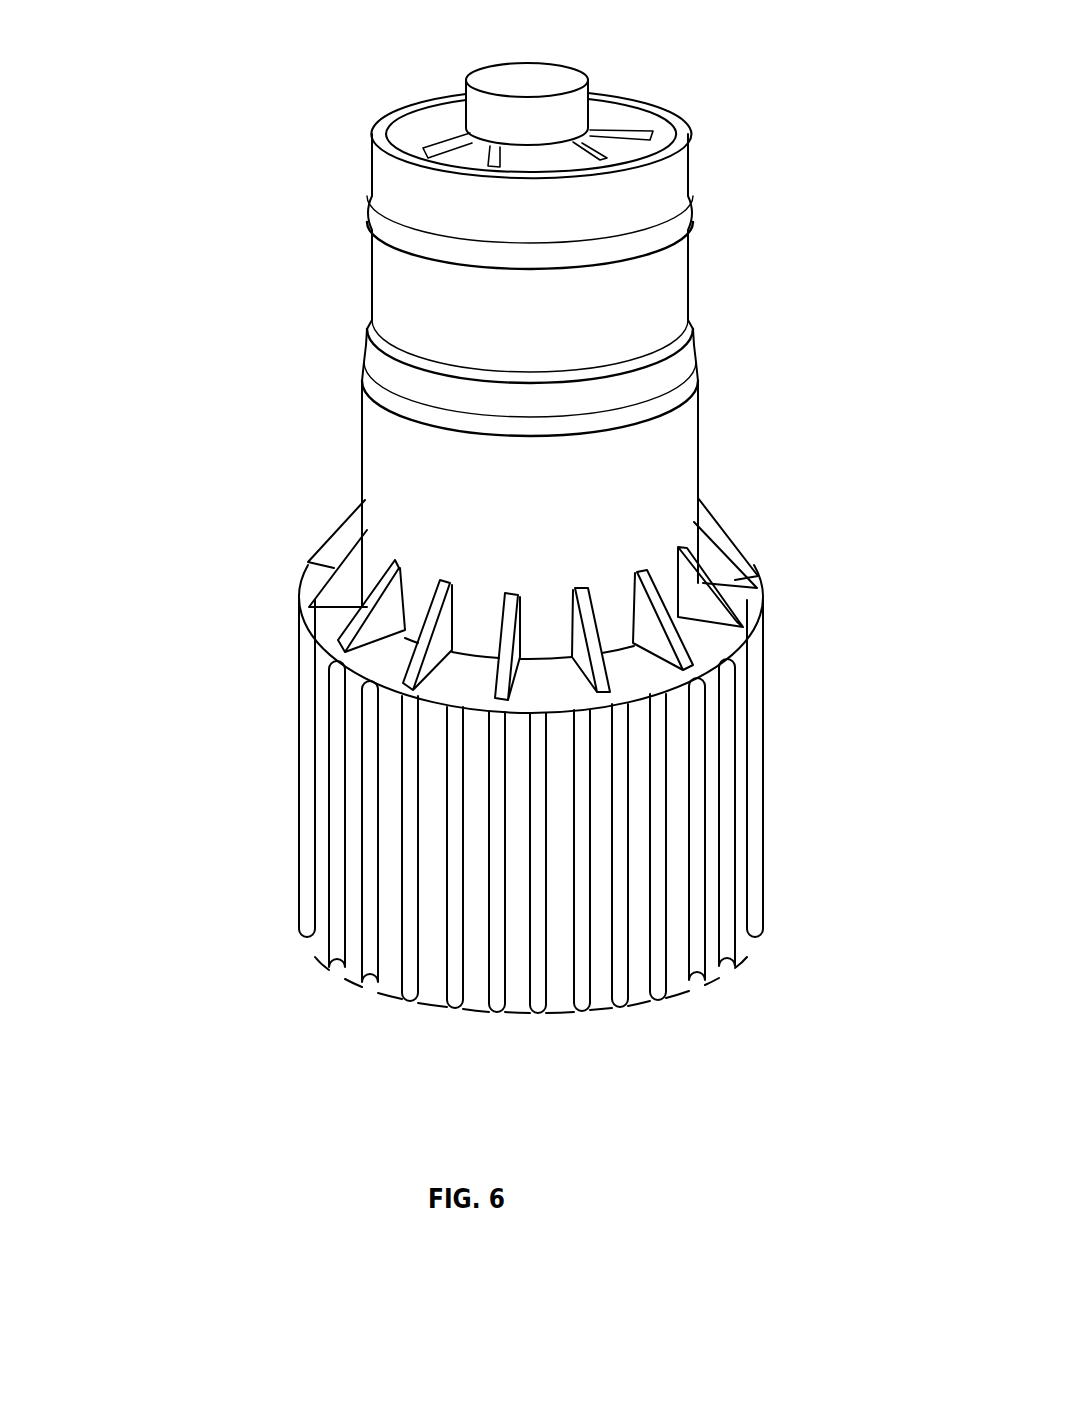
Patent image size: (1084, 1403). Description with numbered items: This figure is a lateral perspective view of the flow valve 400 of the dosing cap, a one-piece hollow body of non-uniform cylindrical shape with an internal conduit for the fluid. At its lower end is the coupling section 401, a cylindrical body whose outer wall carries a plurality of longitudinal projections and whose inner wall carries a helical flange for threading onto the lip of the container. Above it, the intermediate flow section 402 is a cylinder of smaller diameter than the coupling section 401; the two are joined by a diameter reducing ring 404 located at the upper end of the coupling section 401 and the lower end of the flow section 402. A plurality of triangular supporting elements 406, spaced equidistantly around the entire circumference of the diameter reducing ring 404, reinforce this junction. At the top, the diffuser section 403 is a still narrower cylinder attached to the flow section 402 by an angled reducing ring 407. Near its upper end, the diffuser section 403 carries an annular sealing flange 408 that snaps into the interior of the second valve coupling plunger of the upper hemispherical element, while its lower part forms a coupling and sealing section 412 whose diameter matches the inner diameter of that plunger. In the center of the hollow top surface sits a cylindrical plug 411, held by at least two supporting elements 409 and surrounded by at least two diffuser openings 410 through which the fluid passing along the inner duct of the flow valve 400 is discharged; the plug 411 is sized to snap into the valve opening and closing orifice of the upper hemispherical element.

The flow valve 400 is at (142, 89).
The coupling section 401 is at (790, 580).
The flow section 402 is at (790, 340).
The diffuser section 403 is at (790, 81).
The diameter reducing ring 404 is at (300, 587).
The supporting elements 406 is at (331, 531).
The angled reducing ring 407 is at (362, 359).
The annular sealing flange 408 is at (699, 212).
The supporting elements 409 is at (414, 146).
The diffuser openings 410 is at (515, 156).
The cylindrical plug 411 is at (522, 79).
The coupling and sealing section 412 is at (666, 360).